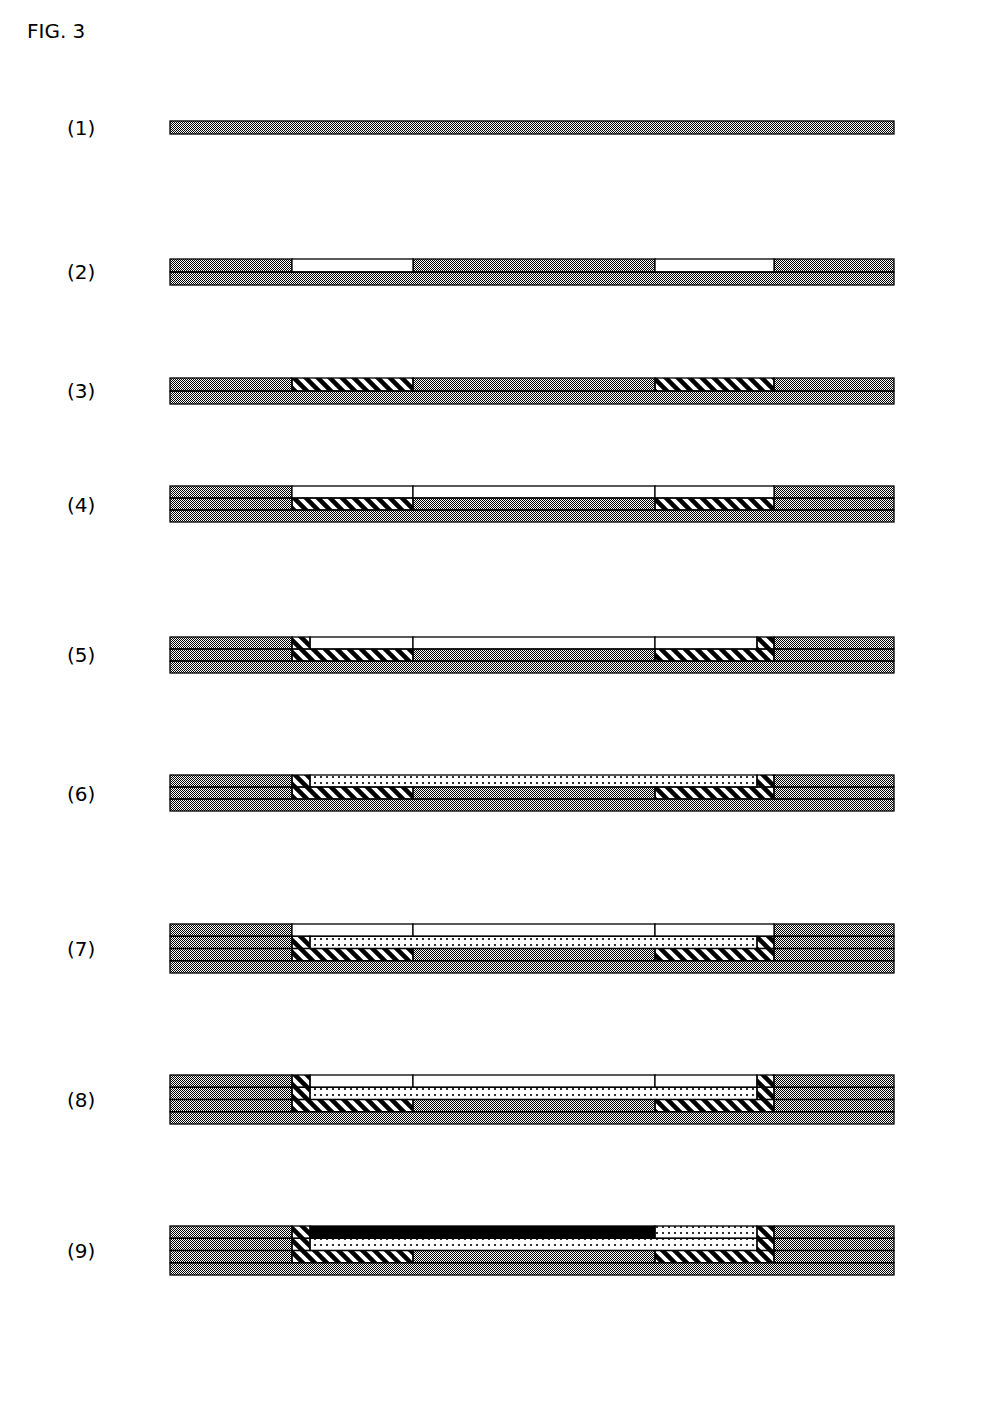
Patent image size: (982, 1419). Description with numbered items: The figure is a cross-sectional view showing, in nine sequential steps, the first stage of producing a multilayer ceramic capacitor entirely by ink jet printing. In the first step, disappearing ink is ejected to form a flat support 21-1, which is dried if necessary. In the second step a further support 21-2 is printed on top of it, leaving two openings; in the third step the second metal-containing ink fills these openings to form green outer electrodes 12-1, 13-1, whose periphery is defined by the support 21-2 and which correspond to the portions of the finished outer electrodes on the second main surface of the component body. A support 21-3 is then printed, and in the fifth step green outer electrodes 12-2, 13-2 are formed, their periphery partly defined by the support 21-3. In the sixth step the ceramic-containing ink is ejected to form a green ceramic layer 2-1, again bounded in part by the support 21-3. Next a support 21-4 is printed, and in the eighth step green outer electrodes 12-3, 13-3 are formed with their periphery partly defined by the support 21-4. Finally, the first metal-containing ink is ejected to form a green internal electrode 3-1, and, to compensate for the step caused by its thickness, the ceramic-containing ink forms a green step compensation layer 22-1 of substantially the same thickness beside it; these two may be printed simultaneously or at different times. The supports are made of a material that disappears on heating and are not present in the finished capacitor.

The support 21-1 is at (798, 118).
The support 21-2 is at (238, 257).
The green outer electrode 12-1 is at (345, 377).
The green outer electrode 13-1 is at (725, 377).
The support 21-3 is at (248, 485).
The green outer electrode 12-2 is at (300, 636).
The green outer electrode 13-2 is at (763, 636).
The green ceramic layer 2-1 is at (570, 774).
The support 21-4 is at (222, 923).
The green outer electrode 12-3 is at (300, 1074).
The green outer electrode 13-3 is at (763, 1074).
The green internal electrode 3-1 is at (425, 1225).
The green step compensation layer 22-1 is at (713, 1225).